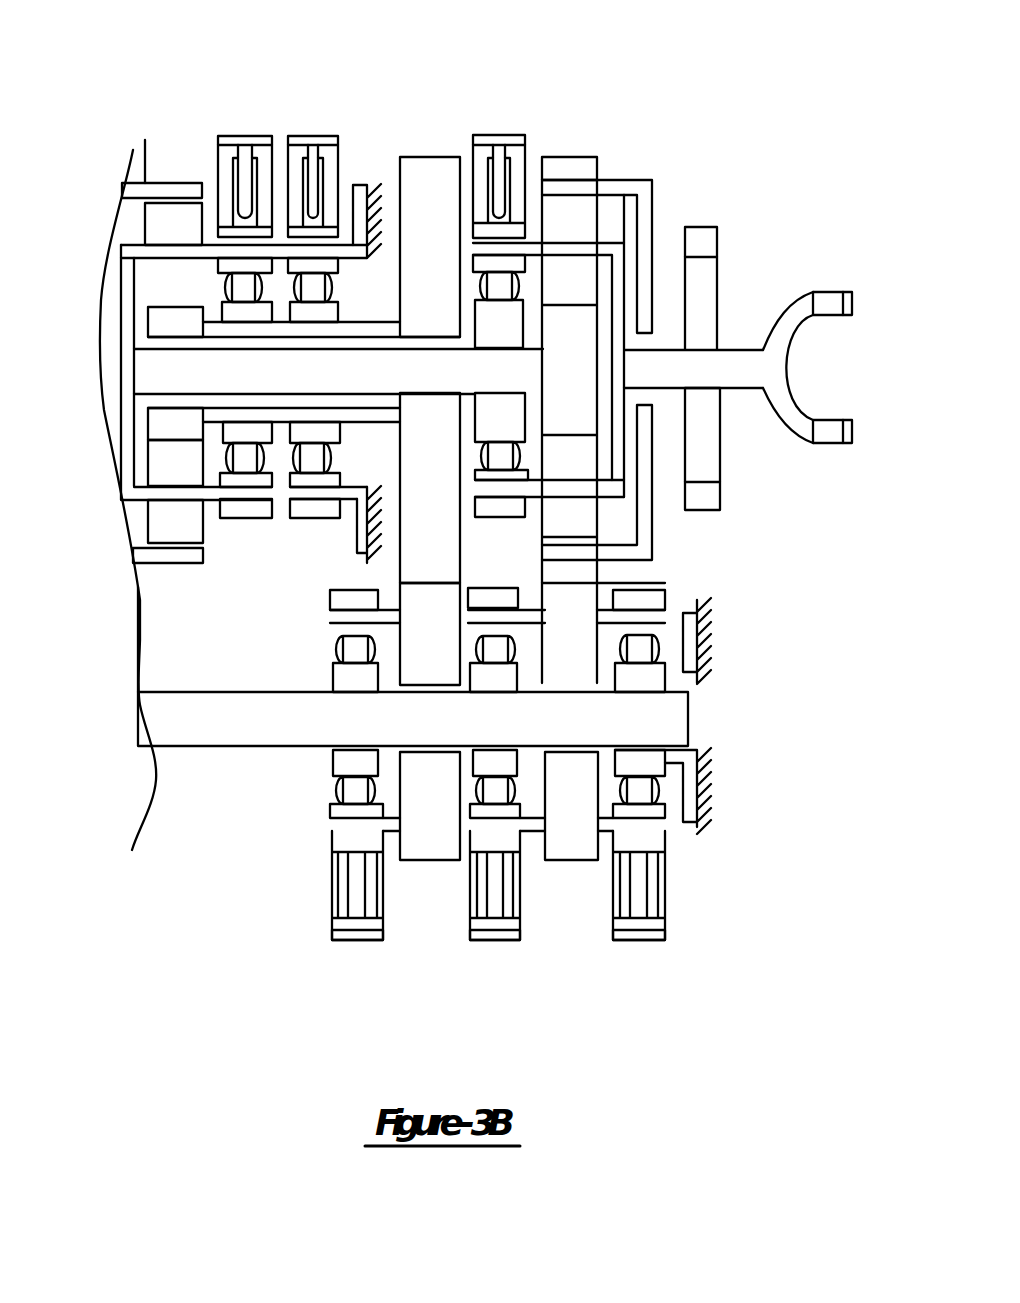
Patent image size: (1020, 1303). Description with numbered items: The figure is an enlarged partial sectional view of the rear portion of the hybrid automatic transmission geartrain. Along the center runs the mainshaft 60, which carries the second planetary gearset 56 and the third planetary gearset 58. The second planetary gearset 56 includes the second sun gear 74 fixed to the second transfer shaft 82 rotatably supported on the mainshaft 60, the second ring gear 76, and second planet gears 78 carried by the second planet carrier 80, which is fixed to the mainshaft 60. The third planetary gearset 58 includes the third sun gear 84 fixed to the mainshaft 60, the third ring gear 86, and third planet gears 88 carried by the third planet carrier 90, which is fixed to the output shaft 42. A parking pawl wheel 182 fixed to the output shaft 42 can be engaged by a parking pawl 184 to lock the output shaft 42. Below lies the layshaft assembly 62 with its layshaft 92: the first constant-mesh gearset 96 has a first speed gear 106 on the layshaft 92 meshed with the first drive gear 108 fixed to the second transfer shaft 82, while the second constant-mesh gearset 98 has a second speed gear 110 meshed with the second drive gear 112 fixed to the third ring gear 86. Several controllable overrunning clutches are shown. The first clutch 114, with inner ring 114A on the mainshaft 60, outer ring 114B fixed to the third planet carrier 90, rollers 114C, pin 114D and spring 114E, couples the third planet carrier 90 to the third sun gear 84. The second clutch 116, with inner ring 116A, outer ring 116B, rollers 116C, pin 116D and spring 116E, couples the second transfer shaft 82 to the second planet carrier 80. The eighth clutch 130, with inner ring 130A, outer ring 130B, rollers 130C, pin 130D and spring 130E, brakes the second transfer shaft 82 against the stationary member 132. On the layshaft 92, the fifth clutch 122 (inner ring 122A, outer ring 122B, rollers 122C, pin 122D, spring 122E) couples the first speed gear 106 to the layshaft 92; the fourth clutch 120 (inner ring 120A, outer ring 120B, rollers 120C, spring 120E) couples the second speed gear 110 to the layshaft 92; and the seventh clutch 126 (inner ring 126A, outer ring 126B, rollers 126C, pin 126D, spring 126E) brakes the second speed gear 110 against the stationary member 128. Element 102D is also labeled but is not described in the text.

The output shaft 42 is at (747, 350).
The second planetary gearset 56 is at (163, 578).
The third planetary gearset 58 is at (612, 168).
The mainshaft 60 is at (423, 384).
The layshaft assembly 62 is at (218, 762).
The second sun gear 74 is at (173, 422).
The second ring gear 76 is at (145, 140).
The second planet gears 78 is at (182, 528).
The second planet carrier 80 is at (127, 473).
The second transfer shaft 82 is at (360, 327).
The third sun gear 84 is at (589, 412).
The third ring gear 86 is at (645, 185).
The third planet gears 88 is at (588, 527).
The third planet carrier 90 is at (628, 258).
The layshaft 92 is at (155, 730).
The first constant-mesh gearset 96 is at (466, 581).
The second constant-mesh gearset 98 is at (606, 581).
The piston 102D is at (510, 927).
The first speed gear 106 is at (442, 660).
The first drive gear 108 is at (442, 514).
The second speed gear 110 is at (589, 818).
The second drive gear 112 is at (572, 160).
The first clutch 114 is at (519, 121).
The inner ring 114A is at (502, 340).
The outer ring 114B is at (501, 503).
The locking elements 114C is at (495, 458).
The pin 114D is at (491, 133).
The spring 114E is at (480, 165).
The second clutch 116 is at (262, 125).
The inner ring 116A is at (255, 315).
The outer ring 116B is at (233, 510).
The locking elements 116C is at (233, 457).
The pin 116D is at (240, 136).
The spring 116E is at (228, 173).
The fourth clutch 120 is at (488, 958).
The inner ring 120A is at (487, 753).
The outer ring 120B is at (480, 840).
The locking elements 120C is at (498, 787).
The spring 120E is at (510, 905).
The fifth clutch 122 is at (313, 943).
The inner ring 122A is at (348, 680).
The outer ring 122B is at (340, 600).
The locking elements 122C is at (357, 652).
The pin 122D is at (363, 930).
The spring 122E is at (338, 880).
The seventh clutch 126 is at (628, 950).
The inner ring 126A is at (633, 675).
The outer ring 126B is at (650, 598).
The locking elements 126C is at (637, 653).
The pin 126D is at (637, 925).
The spring 126E is at (657, 882).
The stationary member 128 is at (690, 642).
The eighth clutch 130 is at (342, 126).
The inner ring 130A is at (310, 315).
The outer ring 130B is at (323, 515).
The locking elements 130C is at (323, 458).
The pin 130D is at (308, 137).
The spring 130E is at (332, 172).
The stationary member 132 is at (365, 554).
The parking pawl wheel 182 is at (710, 452).
The parking pawl 184 is at (710, 498).